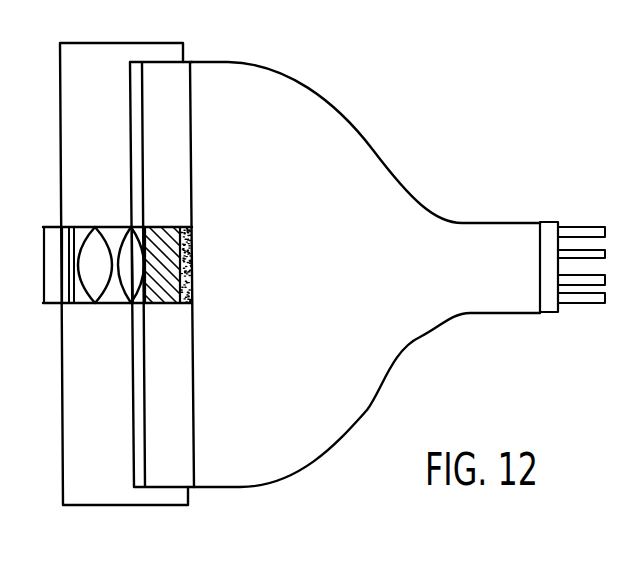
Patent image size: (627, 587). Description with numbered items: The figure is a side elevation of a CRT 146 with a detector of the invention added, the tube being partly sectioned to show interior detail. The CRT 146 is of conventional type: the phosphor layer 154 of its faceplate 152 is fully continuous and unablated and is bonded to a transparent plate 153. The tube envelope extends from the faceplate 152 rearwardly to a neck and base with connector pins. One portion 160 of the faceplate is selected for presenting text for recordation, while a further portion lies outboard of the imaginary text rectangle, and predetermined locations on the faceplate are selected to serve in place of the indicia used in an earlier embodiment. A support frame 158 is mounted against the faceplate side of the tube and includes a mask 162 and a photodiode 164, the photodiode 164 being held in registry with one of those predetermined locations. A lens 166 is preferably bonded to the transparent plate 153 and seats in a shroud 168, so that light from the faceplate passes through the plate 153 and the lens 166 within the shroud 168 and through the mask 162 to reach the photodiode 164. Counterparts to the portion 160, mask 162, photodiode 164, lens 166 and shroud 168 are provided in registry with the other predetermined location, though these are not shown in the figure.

The CRT 146 is at (322, 76).
The faceplate 152 is at (204, 114).
The transparent plate 153 is at (163, 288).
The phosphor layer 154 is at (190, 285).
The support frame 158 is at (110, 483).
The portion of the faceplate 160 is at (102, 230).
The mask 162 is at (84, 303).
The photodiode 164 is at (52, 227).
The lens 166 is at (126, 230).
The shroud 168 is at (122, 303).